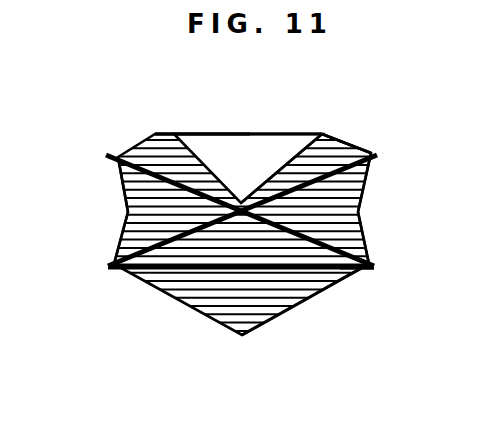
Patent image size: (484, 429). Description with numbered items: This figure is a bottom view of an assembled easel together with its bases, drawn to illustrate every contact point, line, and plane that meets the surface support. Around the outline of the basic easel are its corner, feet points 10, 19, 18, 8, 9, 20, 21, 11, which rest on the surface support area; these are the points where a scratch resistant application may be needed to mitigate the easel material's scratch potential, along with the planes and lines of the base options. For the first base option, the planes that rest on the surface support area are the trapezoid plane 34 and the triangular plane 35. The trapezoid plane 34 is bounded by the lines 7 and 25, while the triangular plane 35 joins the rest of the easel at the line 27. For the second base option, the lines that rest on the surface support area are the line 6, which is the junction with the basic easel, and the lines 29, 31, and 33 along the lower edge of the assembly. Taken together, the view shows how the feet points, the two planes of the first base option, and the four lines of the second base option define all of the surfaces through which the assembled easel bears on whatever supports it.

The Base 2 option line 6 is at (373, 274).
The bounding line of trapezoid plane 7 is at (369, 147).
The corner foot point 8 is at (375, 267).
The corner foot point 9 is at (110, 267).
The corner foot point 10 is at (378, 156).
The corner foot point 11 is at (108, 154).
The corner foot point 18 is at (374, 262).
The corner foot point 19 is at (379, 158).
The corner foot point 20 is at (110, 261).
The corner foot point 21 is at (112, 161).
The bounding line of trapezoid plane 25 is at (326, 133).
The joining line of triangular plane 27 is at (294, 133).
The Base 2 option line 29 is at (332, 292).
The Base 2 option line 31 is at (298, 307).
The Base 2 option line 33 is at (260, 326).
The trapezoid plane 34 is at (162, 135).
The triangular plane 35 is at (223, 135).